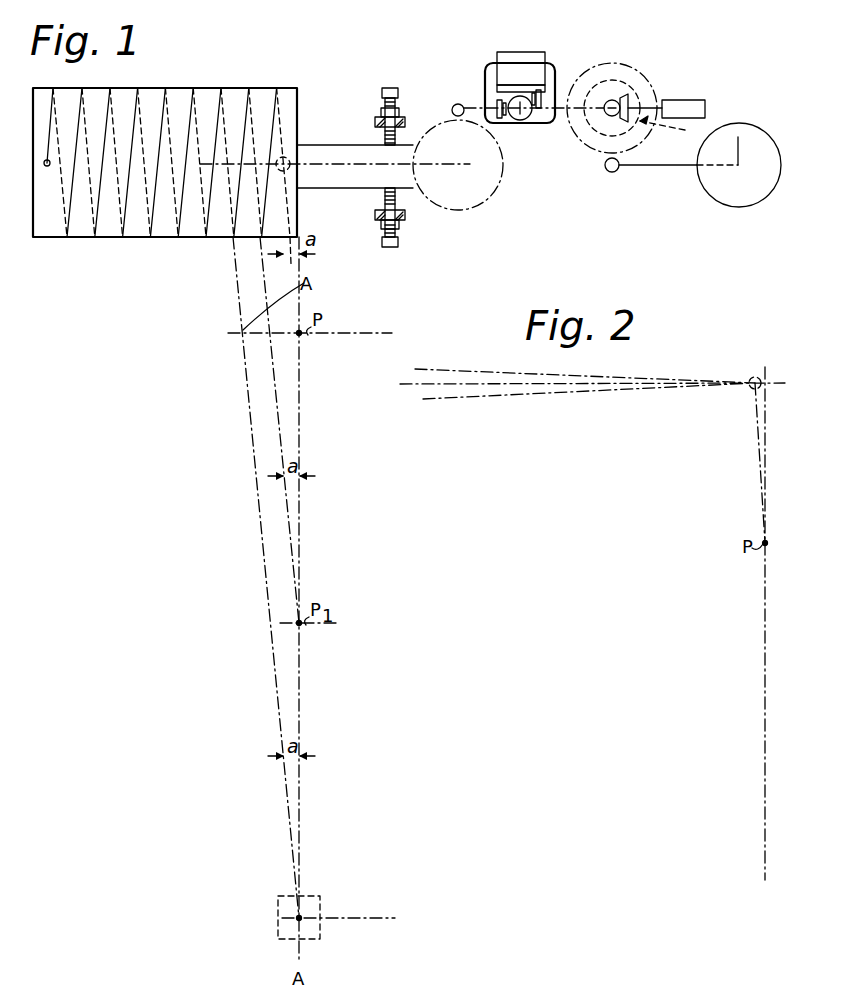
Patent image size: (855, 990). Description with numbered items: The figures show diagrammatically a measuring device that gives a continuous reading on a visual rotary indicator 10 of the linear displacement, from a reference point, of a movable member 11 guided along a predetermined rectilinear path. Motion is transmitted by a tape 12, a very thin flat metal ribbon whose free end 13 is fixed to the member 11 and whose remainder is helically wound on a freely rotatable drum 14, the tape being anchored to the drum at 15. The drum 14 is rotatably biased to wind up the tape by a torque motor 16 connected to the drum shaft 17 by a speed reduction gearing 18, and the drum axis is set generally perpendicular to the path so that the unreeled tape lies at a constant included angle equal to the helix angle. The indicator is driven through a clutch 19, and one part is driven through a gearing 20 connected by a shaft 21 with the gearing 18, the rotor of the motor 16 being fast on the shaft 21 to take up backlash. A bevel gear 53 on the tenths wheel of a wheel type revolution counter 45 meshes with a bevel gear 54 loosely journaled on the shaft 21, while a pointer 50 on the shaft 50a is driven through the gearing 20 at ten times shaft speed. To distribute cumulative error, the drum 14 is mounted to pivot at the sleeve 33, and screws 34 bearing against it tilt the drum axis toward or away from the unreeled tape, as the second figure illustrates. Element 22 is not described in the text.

In FIG. 1, the visual rotary indicator 10 is at (727, 122).
In FIG. 1, the movable member 11 is at (277, 932).
In FIG. 1, the tape 12 is at (266, 292).
In FIG. 2, the tape 12 is at (758, 442).
In FIG. 1, the free end of tape 13 is at (302, 920).
In FIG. 1, the drum 14 is at (297, 104).
In FIG. 1, the tape anchorage 15 is at (45, 166).
In FIG. 1, the torque motor 16 is at (549, 70).
In FIG. 1, the drum shaft 17 is at (357, 172).
In FIG. 2, the drum shaft 17 is at (504, 386).
In FIG. 1, the speed reduction gearing 18 is at (442, 109).
In FIG. 1, the clutch 19 is at (675, 131).
In FIG. 1, the gearing 20 is at (600, 160).
In FIG. 1, the shaft 21 is at (548, 122).
In FIG. 1, the bearing ball 22 is at (519, 120).
In FIG. 1, the pivot sleeve 33 is at (289, 158).
In FIG. 2, the pivot sleeve 33 is at (748, 368).
In FIG. 1, the screws 34 is at (384, 247).
In FIG. 1, the wheel type revolution counter 45 is at (681, 100).
In FIG. 1, the pointer 50 is at (741, 138).
In FIG. 1, the pointer shaft 50a is at (647, 172).
In FIG. 1, the bevel gear 53 is at (628, 100).
In FIG. 1, the bevel gear 54 is at (611, 99).